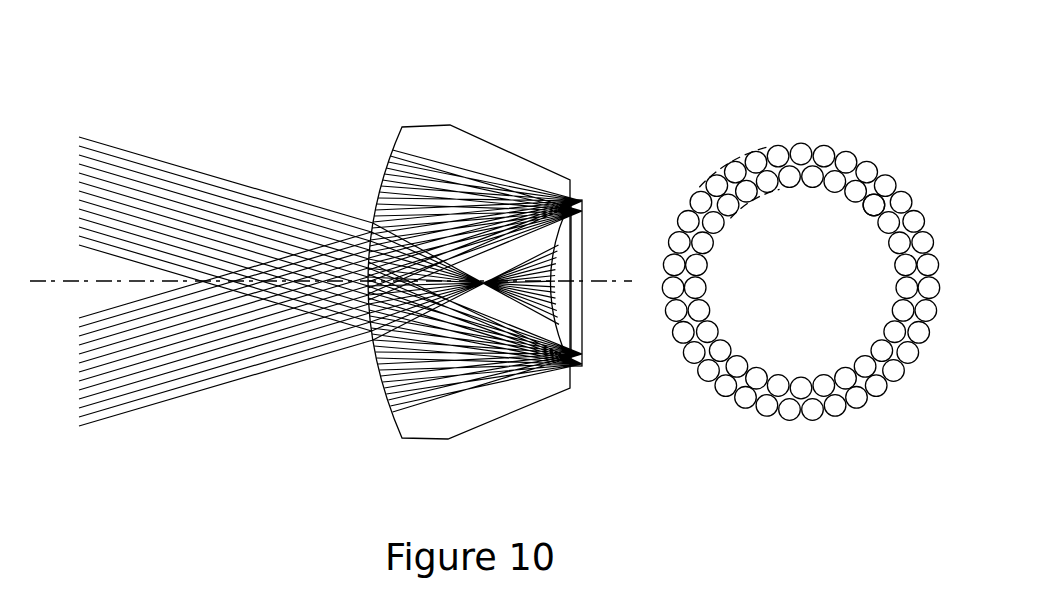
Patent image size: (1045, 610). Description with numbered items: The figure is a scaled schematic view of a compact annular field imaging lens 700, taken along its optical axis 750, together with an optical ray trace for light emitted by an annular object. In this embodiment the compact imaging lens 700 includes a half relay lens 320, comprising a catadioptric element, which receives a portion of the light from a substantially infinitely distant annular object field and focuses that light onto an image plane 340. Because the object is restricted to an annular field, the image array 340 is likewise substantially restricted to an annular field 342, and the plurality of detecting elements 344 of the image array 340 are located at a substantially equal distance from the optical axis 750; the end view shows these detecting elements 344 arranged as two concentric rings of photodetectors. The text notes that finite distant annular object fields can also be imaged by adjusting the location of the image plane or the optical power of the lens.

The compact annular field imaging lens 700 is at (248, 101).
The optical axis 750 is at (630, 284).
The half relay lens 320 is at (511, 415).
The image plane 340 is at (583, 240).
The annular field 342 is at (767, 224).
The detecting elements 344 is at (897, 190).